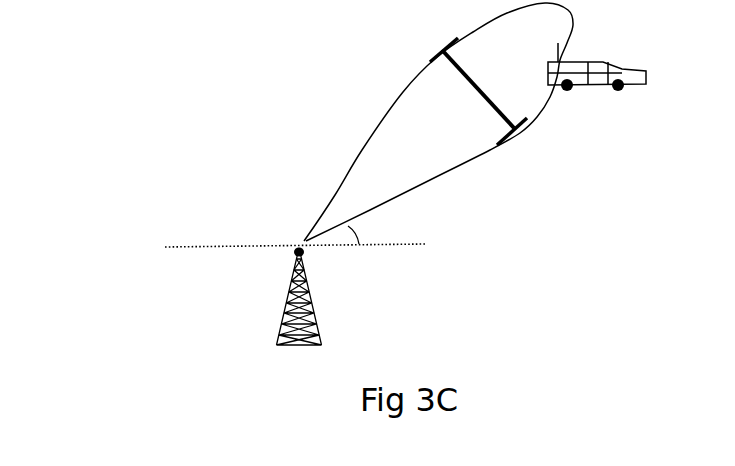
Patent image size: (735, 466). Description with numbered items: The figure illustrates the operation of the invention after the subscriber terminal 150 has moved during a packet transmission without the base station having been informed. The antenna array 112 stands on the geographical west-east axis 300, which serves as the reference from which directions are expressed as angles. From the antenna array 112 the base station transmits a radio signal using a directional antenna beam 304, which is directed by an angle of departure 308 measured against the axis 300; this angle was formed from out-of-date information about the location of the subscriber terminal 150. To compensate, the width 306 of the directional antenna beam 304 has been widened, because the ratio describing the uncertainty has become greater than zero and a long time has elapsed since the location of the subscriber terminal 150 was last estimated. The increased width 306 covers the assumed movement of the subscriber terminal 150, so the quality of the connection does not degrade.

The geographical west-east axis 300 is at (163, 247).
The antenna array 112 is at (315, 290).
The directional antenna beam 304 is at (403, 92).
The width of the directional antenna beam 306 is at (473, 90).
The angle of departure 308 is at (374, 233).
The subscriber terminal 150 is at (641, 72).